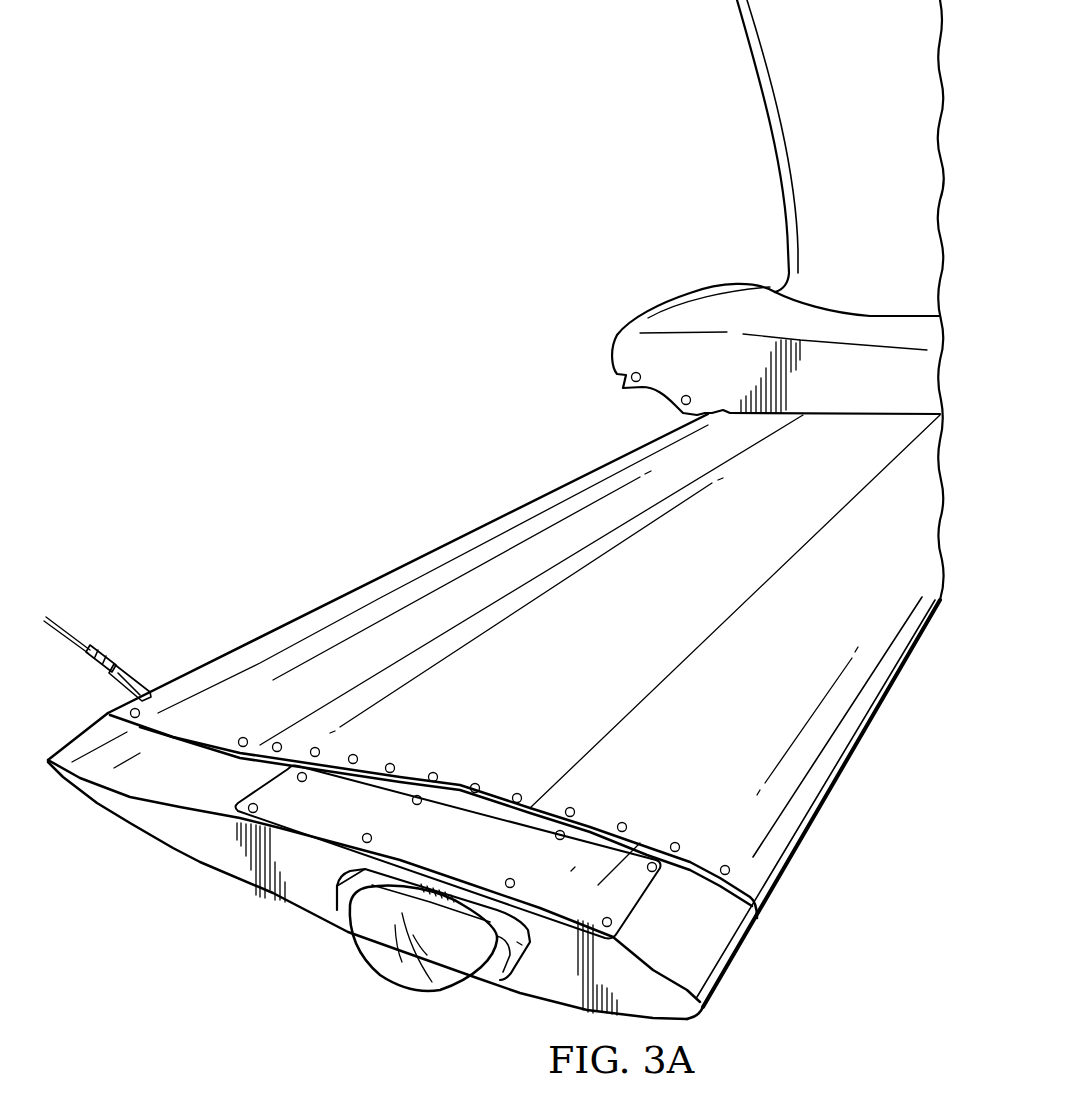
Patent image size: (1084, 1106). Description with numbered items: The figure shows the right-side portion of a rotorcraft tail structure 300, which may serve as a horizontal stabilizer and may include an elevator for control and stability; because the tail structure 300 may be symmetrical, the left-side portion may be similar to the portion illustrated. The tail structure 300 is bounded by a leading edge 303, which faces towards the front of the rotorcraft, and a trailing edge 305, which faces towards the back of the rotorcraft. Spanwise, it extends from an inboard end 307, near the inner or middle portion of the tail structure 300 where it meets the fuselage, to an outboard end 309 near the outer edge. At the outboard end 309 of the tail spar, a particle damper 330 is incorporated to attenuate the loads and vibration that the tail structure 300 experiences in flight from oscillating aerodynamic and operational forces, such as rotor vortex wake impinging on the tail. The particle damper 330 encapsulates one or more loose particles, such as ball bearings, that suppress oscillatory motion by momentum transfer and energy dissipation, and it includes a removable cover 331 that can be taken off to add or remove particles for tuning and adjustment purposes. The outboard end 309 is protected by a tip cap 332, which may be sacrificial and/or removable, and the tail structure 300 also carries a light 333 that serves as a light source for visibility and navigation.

The tail structure 300 is at (285, 387).
The leading edge 303 is at (893, 686).
The trailing edge 305 is at (405, 563).
The inboard end 307 is at (845, 413).
The outboard end 309 is at (170, 806).
The particle damper 330 is at (327, 882).
The removable cover 331 is at (630, 897).
The tip cap 332 is at (713, 977).
The light 333 is at (402, 990).